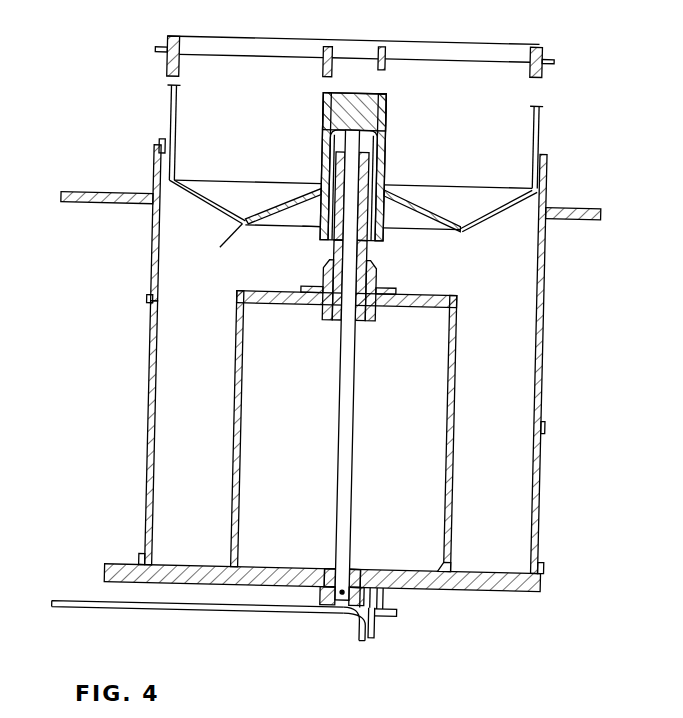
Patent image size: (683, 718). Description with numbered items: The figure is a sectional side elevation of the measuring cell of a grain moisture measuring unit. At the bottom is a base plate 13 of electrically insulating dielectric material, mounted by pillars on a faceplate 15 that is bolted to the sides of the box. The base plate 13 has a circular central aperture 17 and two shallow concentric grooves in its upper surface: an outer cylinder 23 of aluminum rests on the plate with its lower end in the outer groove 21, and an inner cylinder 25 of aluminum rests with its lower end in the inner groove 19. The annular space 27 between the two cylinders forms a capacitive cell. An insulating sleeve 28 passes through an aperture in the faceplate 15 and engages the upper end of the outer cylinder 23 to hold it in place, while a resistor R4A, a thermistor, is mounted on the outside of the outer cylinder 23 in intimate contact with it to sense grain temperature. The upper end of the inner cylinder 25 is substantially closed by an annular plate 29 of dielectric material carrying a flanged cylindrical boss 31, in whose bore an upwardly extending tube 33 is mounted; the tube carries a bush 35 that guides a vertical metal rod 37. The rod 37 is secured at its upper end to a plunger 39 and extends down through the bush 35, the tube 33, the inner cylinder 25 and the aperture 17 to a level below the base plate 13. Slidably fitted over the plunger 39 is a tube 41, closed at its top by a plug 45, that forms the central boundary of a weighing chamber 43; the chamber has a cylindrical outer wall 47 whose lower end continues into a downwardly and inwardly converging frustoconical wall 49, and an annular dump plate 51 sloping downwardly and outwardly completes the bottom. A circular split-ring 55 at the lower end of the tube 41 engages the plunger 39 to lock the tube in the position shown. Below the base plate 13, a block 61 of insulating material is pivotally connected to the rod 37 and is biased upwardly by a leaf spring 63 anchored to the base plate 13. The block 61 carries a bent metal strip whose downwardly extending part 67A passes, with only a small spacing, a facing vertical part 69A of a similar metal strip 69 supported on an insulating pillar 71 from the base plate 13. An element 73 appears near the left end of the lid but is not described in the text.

The base plate 13 is at (245, 573).
The faceplate 15 is at (552, 214).
The circular central aperture 17 is at (356, 575).
The inner groove 19 is at (456, 579).
The outer groove 21 is at (532, 588).
The outer cylinder 23 is at (148, 467).
The inner cylinder 25 is at (245, 489).
The annular space 27 is at (176, 423).
The insulating sleeve 28 is at (150, 253).
The annular plate 29 is at (439, 306).
The flanged cylindrical boss 31 is at (318, 313).
The tube 33 is at (366, 247).
The bush 35 is at (364, 152).
The vertical metal rod 37 is at (356, 405).
The plunger 39 is at (372, 182).
The tube 41 is at (384, 112).
The weighing chamber 43 is at (466, 155).
The plug 45 is at (338, 42).
The cylindrical outer wall 47 is at (536, 127).
The annular frustoconical wall 49 is at (206, 207).
The annular dump plate 51 is at (272, 203).
The circular split-ring 55 is at (309, 228).
The block 61 is at (330, 601).
The leaf spring 63 is at (216, 614).
The downwardly extending part 67A is at (367, 634).
The metal strip 69 is at (390, 616).
The vertical part 69A is at (378, 634).
The insulating pillar 71 is at (390, 600).
The lid flange 73 is at (160, 100).
The resistor R4A is at (545, 420).